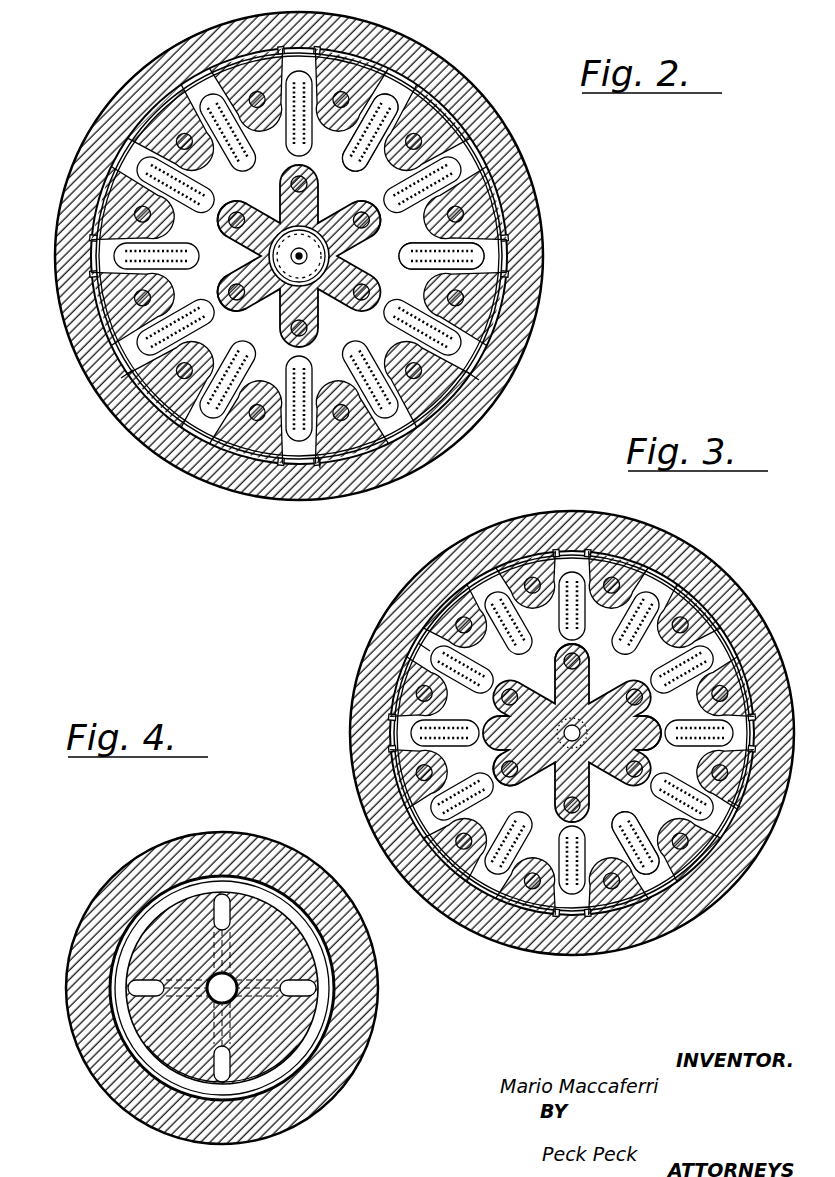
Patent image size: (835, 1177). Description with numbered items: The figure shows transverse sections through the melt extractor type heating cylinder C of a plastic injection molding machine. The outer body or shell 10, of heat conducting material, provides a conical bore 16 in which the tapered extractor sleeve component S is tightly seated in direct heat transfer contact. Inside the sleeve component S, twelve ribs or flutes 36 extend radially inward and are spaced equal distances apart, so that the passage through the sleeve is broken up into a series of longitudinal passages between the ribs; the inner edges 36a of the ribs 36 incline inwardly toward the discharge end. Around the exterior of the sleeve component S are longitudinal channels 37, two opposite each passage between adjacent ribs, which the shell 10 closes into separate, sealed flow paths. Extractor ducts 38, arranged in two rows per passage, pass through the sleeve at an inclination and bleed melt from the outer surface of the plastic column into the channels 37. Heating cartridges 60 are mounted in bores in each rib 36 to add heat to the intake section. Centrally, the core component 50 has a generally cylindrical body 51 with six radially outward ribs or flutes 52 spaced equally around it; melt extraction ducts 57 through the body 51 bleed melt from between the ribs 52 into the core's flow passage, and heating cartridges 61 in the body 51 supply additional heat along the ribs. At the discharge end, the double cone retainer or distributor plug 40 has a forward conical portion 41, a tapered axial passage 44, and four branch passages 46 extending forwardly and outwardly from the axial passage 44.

In FIG. 2, the body or shell 10 is at (548, 251).
In FIG. 3, the body or shell 10 is at (731, 884).
In FIG. 4, the body or shell 10 is at (340, 1087).
In FIG. 2, the conical bore 16 is at (226, 32).
In FIG. 3, the conical bore 16 is at (738, 642).
In FIG. 2, the heating cylinder C is at (147, 55).
In FIG. 3, the heating cylinder C is at (508, 519).
In FIG. 4, the heating cylinder C is at (255, 823).
In FIG. 2, the extractor sleeve component S is at (150, 113).
In FIG. 3, the extractor sleeve component S is at (440, 580).
In FIG. 2, the ribs or flutes 36 is at (466, 140).
In FIG. 3, the ribs or flutes 36 is at (704, 594).
In FIG. 2, the inner edges of the ribs 36a is at (362, 100).
In FIG. 3, the inner edges of the ribs 36a is at (642, 800).
In FIG. 2, the channels 37 is at (366, 88).
In FIG. 3, the channels 37 is at (430, 651).
In FIG. 2, the extractor ducts 38 is at (432, 80).
In FIG. 3, the extractor ducts 38 is at (538, 632).
In FIG. 4, the retainer or distributor plug 40 is at (313, 1028).
In FIG. 4, the forward conical portion 41 is at (268, 1060).
In FIG. 4, the axial passage 44 is at (228, 983).
In FIG. 4, the branch passages 46 is at (222, 894).
In FIG. 2, the core component 50 is at (330, 246).
In FIG. 3, the core component 50 is at (598, 674).
In FIG. 2, the body of the core component 51 is at (262, 258).
In FIG. 3, the body of the core component 51 is at (563, 693).
In FIG. 2, the ribs or flutes of the core component 52 is at (255, 276).
In FIG. 3, the ribs or flutes of the core component 52 is at (553, 810).
In FIG. 3, the melt extraction ducts 57 is at (524, 730).
In FIG. 2, the heating cartridges 60 is at (462, 213).
In FIG. 3, the heating cartridges 60 is at (612, 578).
In FIG. 2, the heating cartridges of the core component 61 is at (291, 184).
In FIG. 3, the heating cartridges of the core component 61 is at (580, 803).